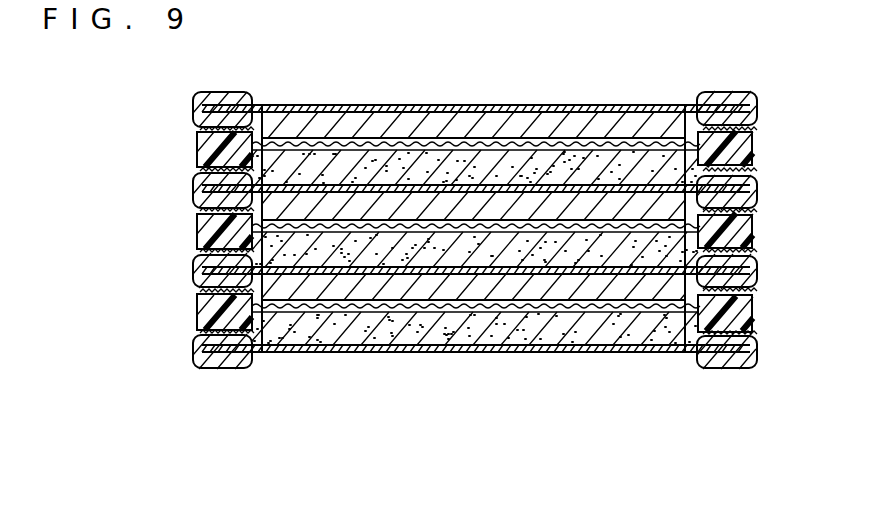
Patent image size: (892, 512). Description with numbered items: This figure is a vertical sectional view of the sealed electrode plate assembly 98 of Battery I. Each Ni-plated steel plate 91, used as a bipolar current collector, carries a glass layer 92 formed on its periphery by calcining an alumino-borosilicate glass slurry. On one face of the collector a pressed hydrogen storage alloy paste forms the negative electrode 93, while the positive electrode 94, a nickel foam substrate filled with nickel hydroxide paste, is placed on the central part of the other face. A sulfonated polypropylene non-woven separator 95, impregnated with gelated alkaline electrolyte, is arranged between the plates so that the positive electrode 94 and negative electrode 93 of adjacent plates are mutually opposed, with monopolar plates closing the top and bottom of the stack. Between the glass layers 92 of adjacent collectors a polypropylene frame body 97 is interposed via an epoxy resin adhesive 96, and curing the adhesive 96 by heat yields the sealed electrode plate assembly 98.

The steel plate 91 is at (473, 106).
The glass layer 92 is at (725, 97).
The negative electrode 93 is at (551, 128).
The positive electrode 94 is at (399, 165).
The separator 95 is at (341, 140).
The adhesive 96 is at (747, 128).
The frame body 97 is at (737, 149).
The electrode plate assembly 98 is at (186, 360).